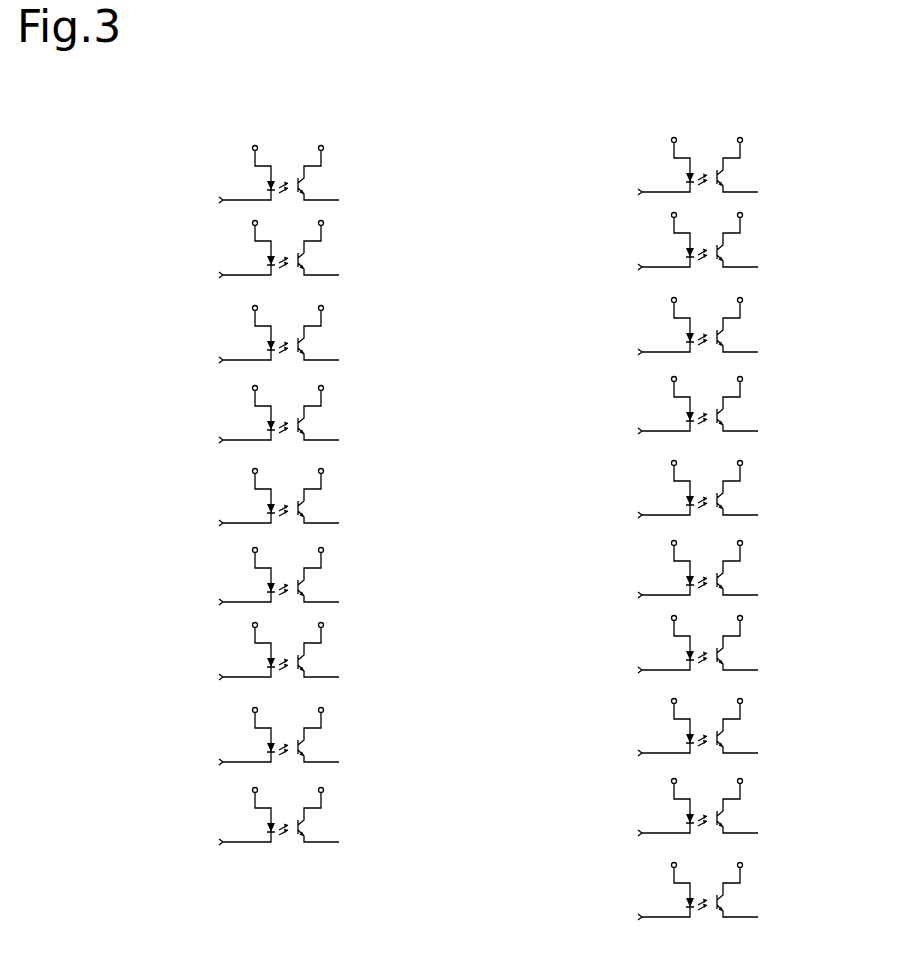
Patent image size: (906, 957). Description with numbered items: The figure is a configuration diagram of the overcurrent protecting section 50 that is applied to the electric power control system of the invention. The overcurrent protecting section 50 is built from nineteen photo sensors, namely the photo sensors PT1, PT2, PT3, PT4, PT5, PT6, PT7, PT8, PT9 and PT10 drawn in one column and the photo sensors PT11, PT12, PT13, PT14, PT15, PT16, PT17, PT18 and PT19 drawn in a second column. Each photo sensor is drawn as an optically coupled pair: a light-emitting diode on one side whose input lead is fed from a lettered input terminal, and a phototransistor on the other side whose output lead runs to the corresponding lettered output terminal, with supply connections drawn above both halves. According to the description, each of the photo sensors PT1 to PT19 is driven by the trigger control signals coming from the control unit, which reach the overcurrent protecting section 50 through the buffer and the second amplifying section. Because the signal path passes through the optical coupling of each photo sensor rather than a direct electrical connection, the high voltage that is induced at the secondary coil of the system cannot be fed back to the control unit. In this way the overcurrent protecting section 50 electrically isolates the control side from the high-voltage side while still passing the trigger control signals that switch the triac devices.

The overcurrent protecting section 50 is at (513, 38).
The photo sensor PT1 is at (698, 174).
The photo sensor PT2 is at (698, 249).
The photo sensor PT3 is at (698, 334).
The photo sensor PT4 is at (698, 413).
The photo sensor PT5 is at (698, 497).
The photo sensor PT6 is at (698, 577).
The photo sensor PT7 is at (698, 652).
The photo sensor PT8 is at (698, 735).
The photo sensor PT9 is at (698, 815).
The photo sensor PT10 is at (698, 899).
The photo sensor PT11 is at (279, 182).
The photo sensor PT12 is at (279, 257).
The photo sensor PT13 is at (279, 342).
The photo sensor PT14 is at (279, 422).
The photo sensor PT15 is at (279, 505).
The photo sensor PT16 is at (279, 584).
The photo sensor PT17 is at (279, 659).
The photo sensor PT18 is at (279, 744).
The photo sensor PT19 is at (279, 824).